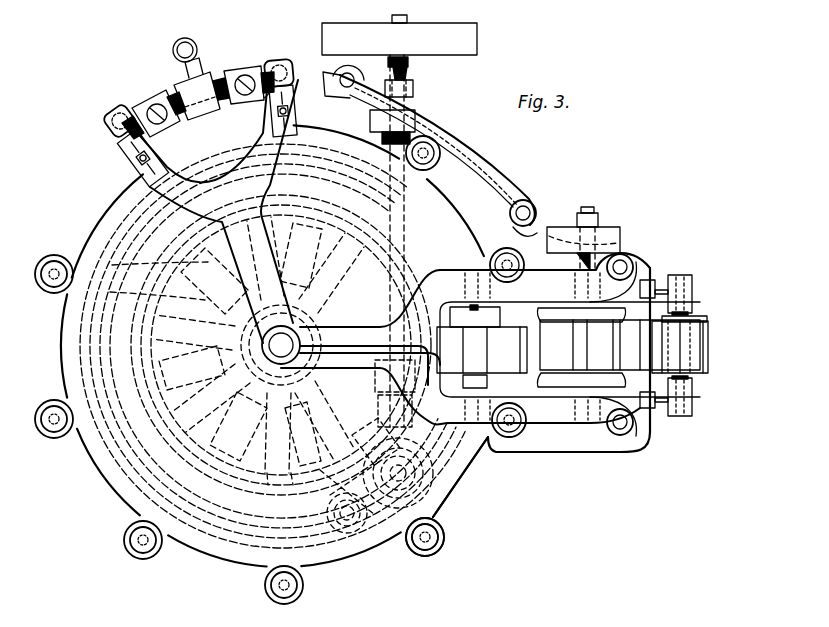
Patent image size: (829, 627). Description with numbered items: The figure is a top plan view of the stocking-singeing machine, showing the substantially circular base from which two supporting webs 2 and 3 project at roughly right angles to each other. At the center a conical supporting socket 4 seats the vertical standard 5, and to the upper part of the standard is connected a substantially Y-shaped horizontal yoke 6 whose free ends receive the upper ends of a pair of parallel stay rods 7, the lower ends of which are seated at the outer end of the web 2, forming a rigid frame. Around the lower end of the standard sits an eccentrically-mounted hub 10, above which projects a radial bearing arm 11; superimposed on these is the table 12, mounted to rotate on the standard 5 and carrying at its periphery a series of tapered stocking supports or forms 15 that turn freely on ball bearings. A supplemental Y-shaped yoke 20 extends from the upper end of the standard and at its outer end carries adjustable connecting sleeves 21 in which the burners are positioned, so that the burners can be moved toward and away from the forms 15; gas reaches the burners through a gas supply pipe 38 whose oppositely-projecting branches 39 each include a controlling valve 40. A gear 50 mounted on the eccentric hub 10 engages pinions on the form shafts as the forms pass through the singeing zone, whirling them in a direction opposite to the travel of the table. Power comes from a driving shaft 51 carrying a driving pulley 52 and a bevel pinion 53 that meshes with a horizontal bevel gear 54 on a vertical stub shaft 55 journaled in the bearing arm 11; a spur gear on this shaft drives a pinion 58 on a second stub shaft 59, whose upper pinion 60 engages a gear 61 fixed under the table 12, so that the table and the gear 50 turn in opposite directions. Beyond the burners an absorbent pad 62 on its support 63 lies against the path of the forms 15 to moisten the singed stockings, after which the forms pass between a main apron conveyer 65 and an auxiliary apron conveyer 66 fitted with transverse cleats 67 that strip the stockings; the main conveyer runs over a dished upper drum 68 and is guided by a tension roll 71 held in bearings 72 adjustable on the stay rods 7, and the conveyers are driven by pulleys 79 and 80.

The supporting web 2 is at (626, 260).
The supporting web 3 is at (298, 95).
The conical supporting socket 4 is at (283, 392).
The standard 5 is at (281, 345).
The yoke 6 is at (450, 273).
The stay rods 7 is at (628, 266).
The eccentrically-mounted hub 10 is at (240, 394).
The bearing arm 11 is at (370, 413).
The table 12 is at (114, 486).
The stocking support or form 15 is at (50, 290).
The supplemental Y-shaped yoke 20 is at (282, 176).
The adjustable connecting sleeves 21 is at (114, 140).
The gas supply pipe 38 is at (172, 49).
The branches 39 is at (210, 120).
The controlling valve 40 is at (158, 103).
The gear 50 is at (140, 230).
The driving shaft 51 is at (432, 181).
The driving pulley 52 is at (460, 55).
The bevel pinion 53 is at (408, 452).
The bevel gear 54 is at (460, 470).
The stub shaft 55 is at (405, 483).
The pinion 58 is at (367, 540).
The second stub shaft 59 is at (342, 522).
The pinion 60 is at (323, 506).
The gear 61 is at (148, 357).
The absorbent pad 62 is at (468, 164).
The support 63 is at (508, 188).
The main apron conveyer 65 is at (712, 349).
The auxiliary apron conveyer 66 is at (482, 357).
The cleats 67 is at (708, 362).
The upper drum 68 is at (618, 314).
The tension roll 71 is at (700, 318).
The bearings 72 is at (572, 330).
The pulley 79 is at (608, 232).
The pulley 80 is at (500, 312).